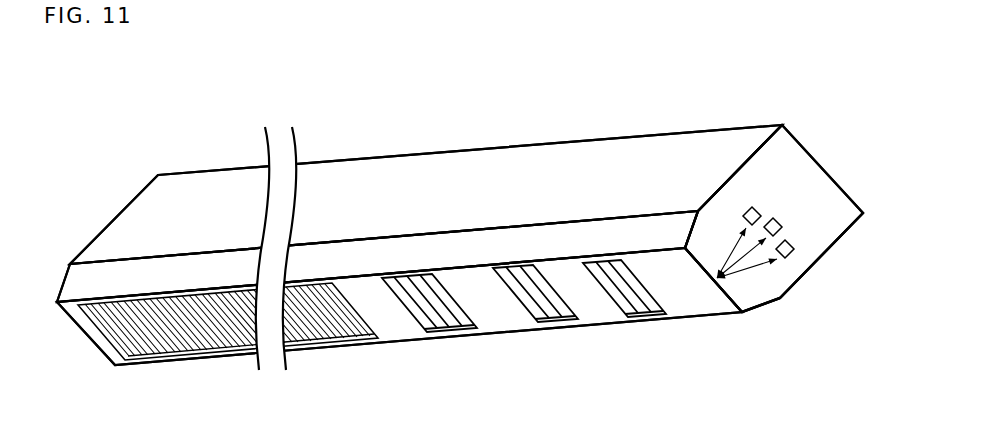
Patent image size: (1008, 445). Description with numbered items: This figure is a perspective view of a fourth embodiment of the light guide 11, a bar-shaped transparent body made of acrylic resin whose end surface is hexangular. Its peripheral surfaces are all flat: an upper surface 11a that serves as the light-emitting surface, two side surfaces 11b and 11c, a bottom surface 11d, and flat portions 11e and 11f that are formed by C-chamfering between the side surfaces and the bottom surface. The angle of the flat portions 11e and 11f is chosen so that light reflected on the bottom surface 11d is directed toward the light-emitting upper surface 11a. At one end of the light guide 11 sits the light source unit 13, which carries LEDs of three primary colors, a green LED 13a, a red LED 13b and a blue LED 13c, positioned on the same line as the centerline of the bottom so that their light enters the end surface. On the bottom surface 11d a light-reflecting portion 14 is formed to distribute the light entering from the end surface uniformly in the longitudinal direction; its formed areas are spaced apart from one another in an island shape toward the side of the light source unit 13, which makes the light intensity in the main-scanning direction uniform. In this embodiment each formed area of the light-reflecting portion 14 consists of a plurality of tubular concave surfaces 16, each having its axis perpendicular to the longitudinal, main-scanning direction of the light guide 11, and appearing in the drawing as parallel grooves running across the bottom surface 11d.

The light guide 11 is at (432, 131).
The upper surface 11a is at (812, 155).
The side surface 11b is at (533, 158).
The side surface 11c is at (807, 273).
The bottom surface 11d is at (588, 298).
The flat portion 11e is at (625, 237).
The flat portion 11f is at (762, 308).
The light source unit 13 is at (792, 219).
The LED (green) 13a is at (751, 206).
The LED (red) 13b is at (774, 217).
The LED (blue) 13c is at (796, 249).
The light-reflecting portion 14 is at (171, 332).
The tubular concave surface 16 is at (327, 327).